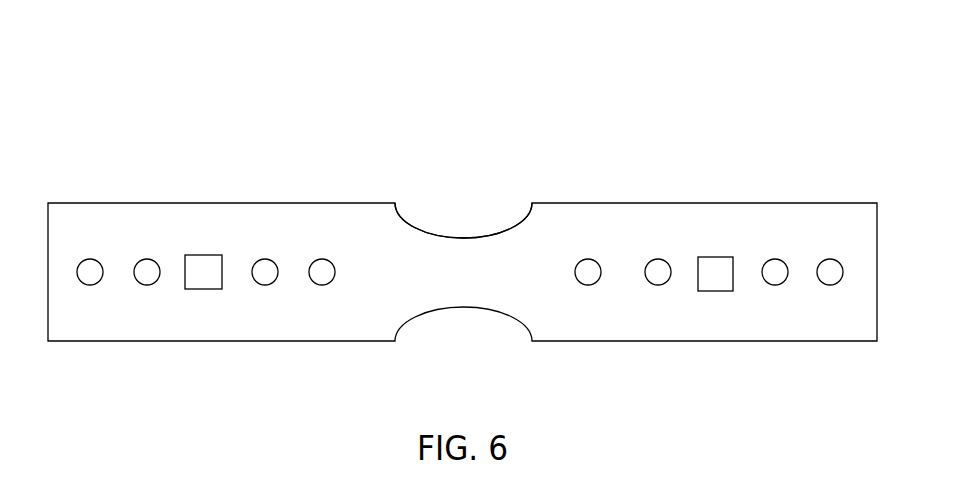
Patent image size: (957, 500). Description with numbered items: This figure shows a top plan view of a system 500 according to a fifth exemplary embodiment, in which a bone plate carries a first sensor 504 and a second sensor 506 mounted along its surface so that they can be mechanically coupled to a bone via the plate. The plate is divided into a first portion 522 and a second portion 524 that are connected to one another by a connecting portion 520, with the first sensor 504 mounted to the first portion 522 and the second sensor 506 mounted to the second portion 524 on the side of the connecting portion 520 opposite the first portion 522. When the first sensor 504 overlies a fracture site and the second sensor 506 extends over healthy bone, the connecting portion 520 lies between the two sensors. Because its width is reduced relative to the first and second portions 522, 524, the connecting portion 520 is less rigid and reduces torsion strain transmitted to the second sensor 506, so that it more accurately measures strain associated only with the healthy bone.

The system 500 is at (346, 99).
The first sensor 504 is at (205, 290).
The second sensor 506 is at (723, 292).
The connecting portion 520 is at (463, 257).
The first portion 522 is at (195, 220).
The second portion 524 is at (740, 223).